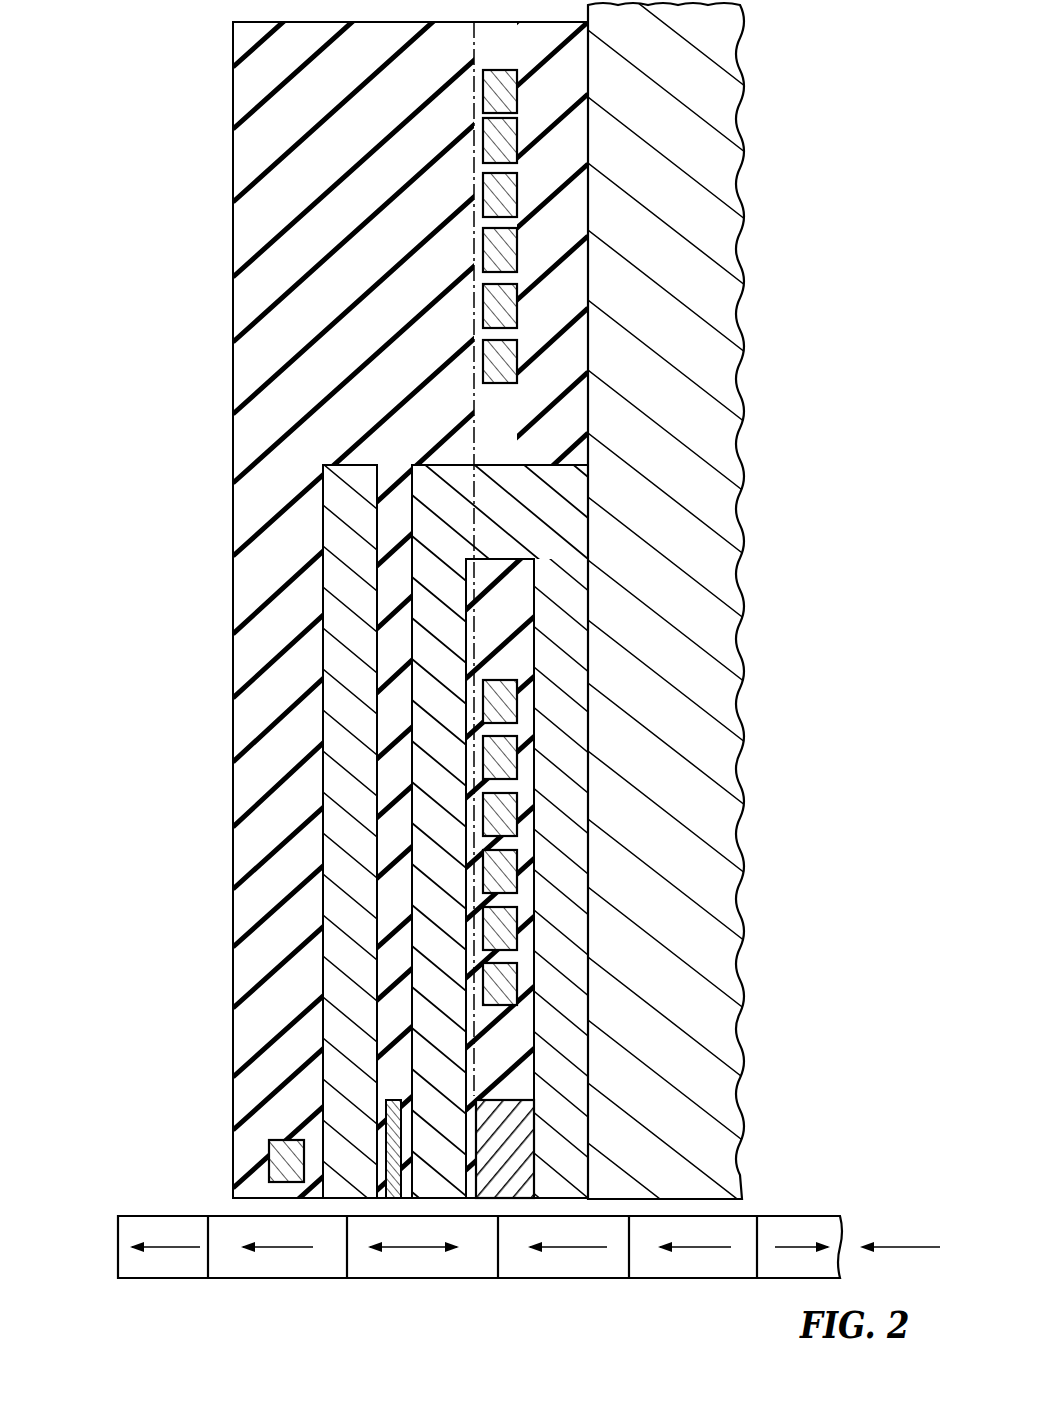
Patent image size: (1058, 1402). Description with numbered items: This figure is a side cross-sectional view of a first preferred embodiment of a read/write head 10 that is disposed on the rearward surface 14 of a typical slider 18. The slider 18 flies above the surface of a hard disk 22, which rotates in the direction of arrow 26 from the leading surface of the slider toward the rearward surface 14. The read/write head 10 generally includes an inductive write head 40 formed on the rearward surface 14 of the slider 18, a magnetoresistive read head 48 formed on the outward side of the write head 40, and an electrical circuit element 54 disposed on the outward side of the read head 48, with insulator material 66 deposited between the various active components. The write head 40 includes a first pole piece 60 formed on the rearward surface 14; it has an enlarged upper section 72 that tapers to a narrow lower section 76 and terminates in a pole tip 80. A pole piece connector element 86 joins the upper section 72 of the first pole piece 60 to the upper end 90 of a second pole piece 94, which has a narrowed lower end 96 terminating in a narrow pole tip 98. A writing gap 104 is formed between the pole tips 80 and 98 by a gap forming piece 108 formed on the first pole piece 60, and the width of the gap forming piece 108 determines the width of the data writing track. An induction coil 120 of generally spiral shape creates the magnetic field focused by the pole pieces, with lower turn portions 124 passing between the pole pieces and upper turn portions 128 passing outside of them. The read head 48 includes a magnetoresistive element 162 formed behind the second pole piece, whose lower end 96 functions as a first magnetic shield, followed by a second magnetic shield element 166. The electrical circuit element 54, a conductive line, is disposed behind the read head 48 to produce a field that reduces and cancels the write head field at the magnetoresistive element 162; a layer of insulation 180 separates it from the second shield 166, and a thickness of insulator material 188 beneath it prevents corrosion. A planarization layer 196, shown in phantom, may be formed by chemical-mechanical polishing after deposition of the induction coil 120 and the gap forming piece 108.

The read/write head 10 is at (138, 552).
The rearward surface 14 is at (588, 285).
The slider 18 is at (672, 269).
The hard disk 22 is at (805, 1216).
The arrow 26 is at (903, 1247).
The inductive write head 40 is at (517, 602).
The magnetoresistive read head 48 is at (330, 865).
The electrical circuit element 54 is at (292, 1160).
The first pole piece 60 is at (578, 792).
The insulator material 66 is at (513, 645).
The enlarged upper section 72 is at (577, 530).
The narrow lower section 76 is at (565, 965).
The pole tip 80 is at (555, 1140).
The pole piece connector element 86 is at (513, 523).
The upper end of second pole piece 90 is at (422, 512).
The second pole piece 94 is at (422, 623).
The narrowed lower end 96 is at (432, 1022).
The second pole tip 98 is at (437, 1187).
The writing gap 104 is at (470, 1197).
The gap forming piece 108 is at (517, 1183).
The induction coil 120 is at (582, 537).
The lower turn portions 124 is at (507, 705).
The upper turn portions 128 is at (518, 133).
The magnetoresistive element 162 is at (392, 1113).
The second magnetic shield element 166 is at (335, 1043).
The layer of insulation 180 is at (312, 1180).
The insulator material 188 is at (285, 1197).
The planarization layer 196 is at (474, 392).